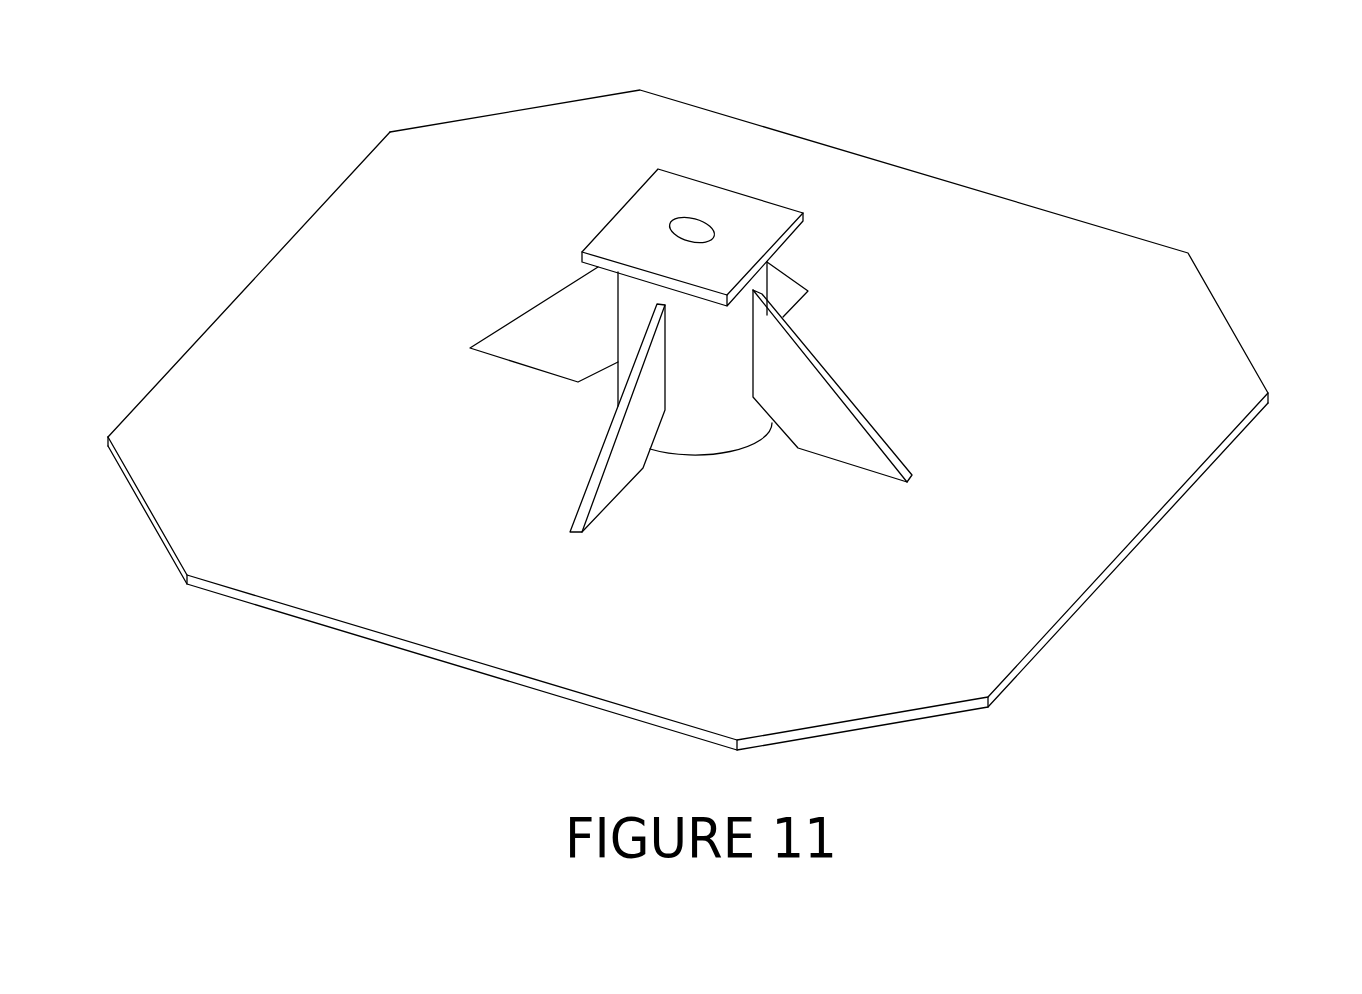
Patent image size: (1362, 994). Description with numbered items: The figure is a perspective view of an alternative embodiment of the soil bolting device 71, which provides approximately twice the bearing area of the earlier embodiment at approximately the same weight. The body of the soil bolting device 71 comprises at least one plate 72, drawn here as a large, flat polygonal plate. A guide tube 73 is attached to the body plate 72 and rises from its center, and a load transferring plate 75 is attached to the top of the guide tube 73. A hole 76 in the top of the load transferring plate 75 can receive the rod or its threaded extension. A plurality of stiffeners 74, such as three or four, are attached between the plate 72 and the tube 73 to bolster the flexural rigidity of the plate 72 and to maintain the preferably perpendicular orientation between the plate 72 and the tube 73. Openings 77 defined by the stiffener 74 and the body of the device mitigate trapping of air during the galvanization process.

The soil bolting device 71 is at (362, 665).
The plate 72 is at (275, 255).
The guide tube 73 is at (729, 452).
The stiffeners 74 is at (607, 430).
The load transferring plate 75 is at (778, 200).
The hole 76 is at (665, 222).
The openings 77 is at (775, 435).